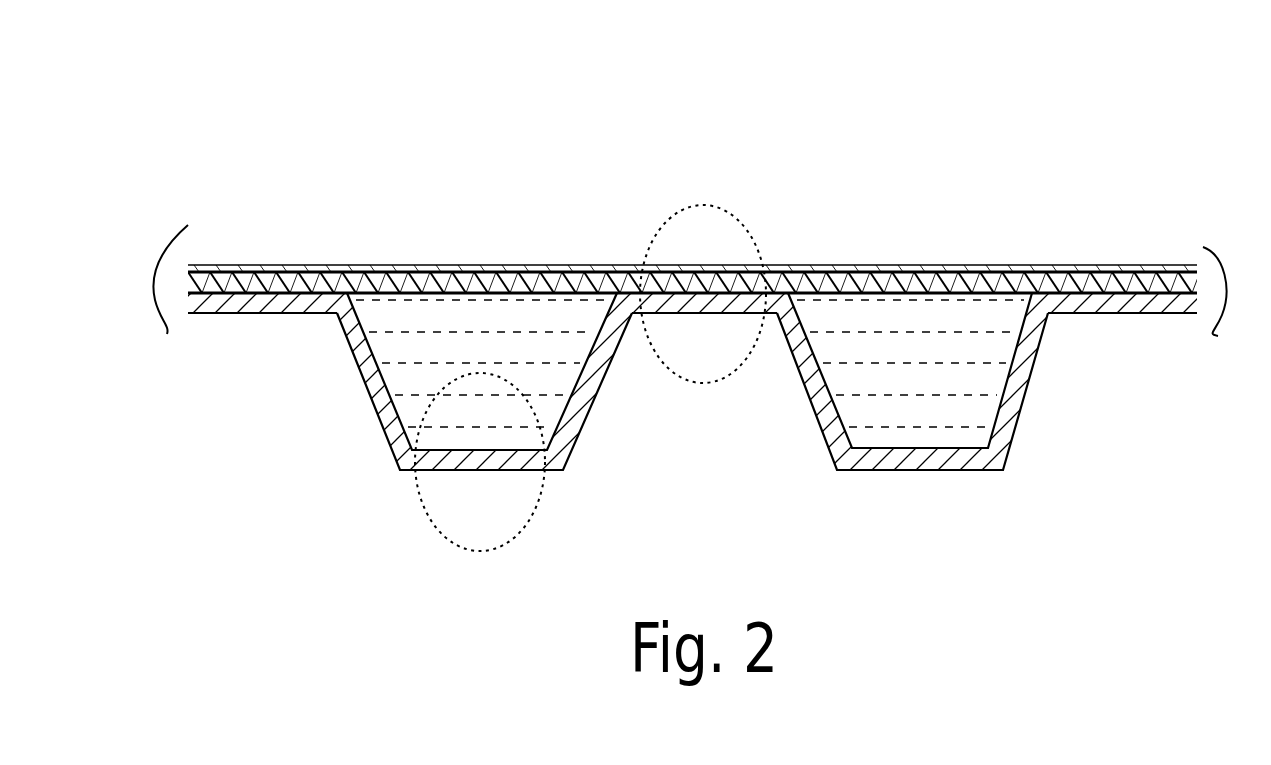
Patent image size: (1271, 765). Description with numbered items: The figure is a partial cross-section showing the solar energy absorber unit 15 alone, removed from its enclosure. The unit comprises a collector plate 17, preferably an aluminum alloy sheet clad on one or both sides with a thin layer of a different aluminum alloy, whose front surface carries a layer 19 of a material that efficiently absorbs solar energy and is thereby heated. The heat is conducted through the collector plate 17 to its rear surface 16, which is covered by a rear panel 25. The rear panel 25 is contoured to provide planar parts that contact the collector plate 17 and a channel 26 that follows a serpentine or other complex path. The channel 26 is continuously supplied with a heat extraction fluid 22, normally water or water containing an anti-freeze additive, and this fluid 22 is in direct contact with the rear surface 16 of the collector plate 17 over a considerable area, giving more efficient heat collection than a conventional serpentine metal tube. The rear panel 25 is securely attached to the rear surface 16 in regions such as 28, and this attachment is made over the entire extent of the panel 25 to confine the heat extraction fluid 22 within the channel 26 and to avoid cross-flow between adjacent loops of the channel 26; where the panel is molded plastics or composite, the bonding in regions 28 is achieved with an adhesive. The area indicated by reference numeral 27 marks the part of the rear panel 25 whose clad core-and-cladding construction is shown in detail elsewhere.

The solar energy absorber unit 15 is at (689, 305).
The rear surface 16 is at (370, 296).
The collector plate 17 is at (945, 267).
The layer 19 is at (1093, 267).
The heat extraction fluid 22 is at (412, 347).
The rear panel 25 is at (252, 303).
The channel 26 is at (583, 402).
The area of the rear panel 27 is at (525, 532).
The attachment regions 28 is at (747, 230).